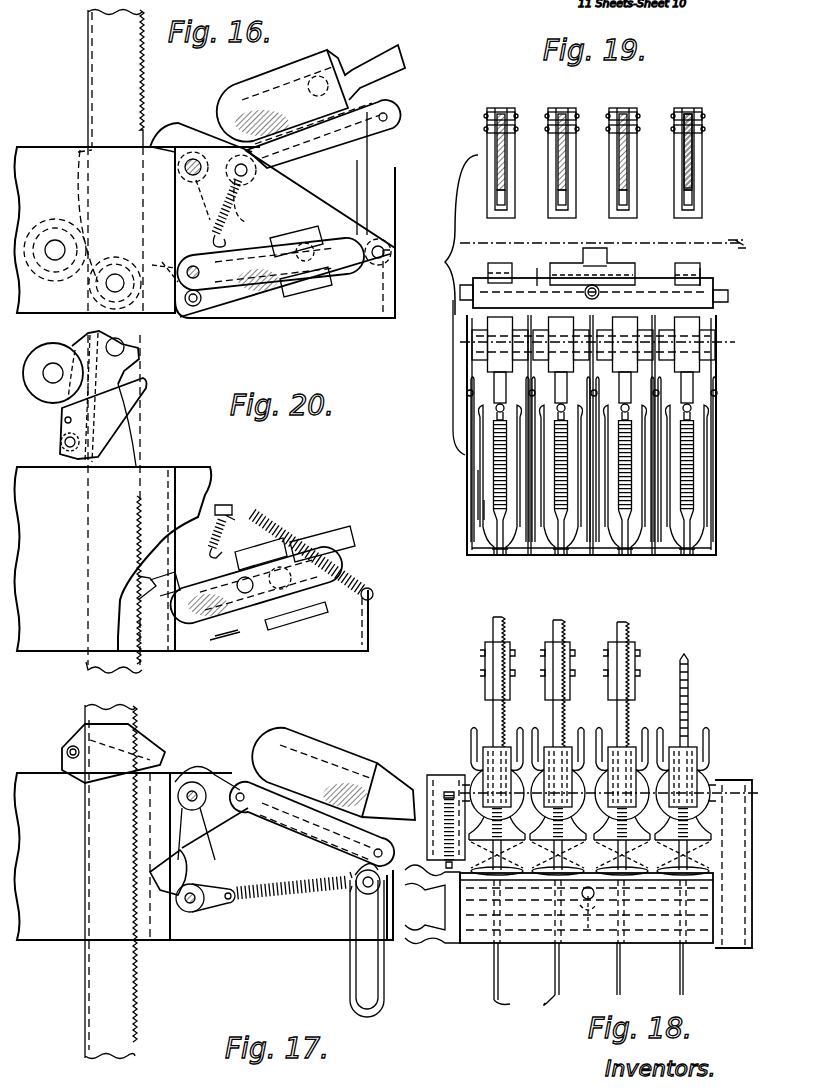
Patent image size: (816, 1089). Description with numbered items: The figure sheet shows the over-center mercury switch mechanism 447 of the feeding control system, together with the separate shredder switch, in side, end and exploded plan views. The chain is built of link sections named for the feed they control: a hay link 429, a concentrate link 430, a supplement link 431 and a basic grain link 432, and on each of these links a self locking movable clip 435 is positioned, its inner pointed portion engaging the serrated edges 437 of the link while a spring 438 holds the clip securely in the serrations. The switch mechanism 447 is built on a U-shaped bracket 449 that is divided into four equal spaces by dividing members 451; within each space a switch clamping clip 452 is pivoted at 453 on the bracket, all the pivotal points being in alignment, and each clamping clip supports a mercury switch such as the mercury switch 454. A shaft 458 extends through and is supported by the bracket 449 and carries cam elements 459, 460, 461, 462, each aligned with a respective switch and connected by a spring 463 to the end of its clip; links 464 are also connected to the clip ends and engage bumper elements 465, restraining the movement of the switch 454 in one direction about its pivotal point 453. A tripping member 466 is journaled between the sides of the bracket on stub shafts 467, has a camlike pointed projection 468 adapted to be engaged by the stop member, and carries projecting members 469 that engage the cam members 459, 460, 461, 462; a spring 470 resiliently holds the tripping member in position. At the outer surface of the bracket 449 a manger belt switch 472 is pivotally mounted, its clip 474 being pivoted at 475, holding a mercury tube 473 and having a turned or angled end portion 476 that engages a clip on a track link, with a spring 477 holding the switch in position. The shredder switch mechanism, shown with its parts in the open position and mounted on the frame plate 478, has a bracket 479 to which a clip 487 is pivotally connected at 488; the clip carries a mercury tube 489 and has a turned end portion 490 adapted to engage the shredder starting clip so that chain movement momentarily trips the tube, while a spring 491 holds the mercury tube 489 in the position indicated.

In FIG. 16, the hay link 429 is at (118, 88).
In FIG. 20, the hay link 429 is at (85, 662).
In FIG. 17, the hay link 429 is at (105, 1017).
In FIG. 19, the hay link 429 is at (508, 145).
In FIG. 18, the hay link 429 is at (504, 628).
In FIG. 19, the concentrate link 430 is at (568, 145).
In FIG. 18, the concentrate link 430 is at (565, 630).
In FIG. 19, the supplement link 431 is at (630, 145).
In FIG. 18, the supplement link 431 is at (630, 632).
In FIG. 19, the basic grain link 432 is at (688, 163).
In FIG. 18, the basic grain link 432 is at (690, 662).
In FIG. 20, the self locking movable clip 435 is at (128, 403).
In FIG. 19, the self locking movable clip 435 is at (700, 112).
In FIG. 16, the blade teeth 437 is at (146, 66).
In FIG. 20, the blade teeth 437 is at (139, 652).
In FIG. 17, the blade teeth 437 is at (140, 1030).
In FIG. 18, the blade teeth 437 is at (503, 708).
In FIG. 17, the spring 438 is at (62, 755).
In FIG. 16, the mercury switch mechanism 447 is at (393, 327).
In FIG. 17, the mercury switch mechanism 447 is at (332, 952).
In FIG. 19, the mercury switch mechanism 447 is at (557, 435).
In FIG. 16, the bracket 449 is at (357, 322).
In FIG. 19, the bracket 449 is at (717, 442).
In FIG. 19, the dividing members 451 is at (540, 540).
In FIG. 16, the switch clamping clip 452 is at (303, 73).
In FIG. 17, the switch clamping clip 452 is at (314, 772).
In FIG. 19, the switch clamping clip 452 is at (480, 470).
In FIG. 18, the switch clamping clip 452 is at (472, 740).
In FIG. 16, the pivotal point 453 is at (243, 177).
In FIG. 19, the pivotal point 453 is at (468, 393).
In FIG. 16, the mercury switch 454 is at (386, 60).
In FIG. 17, the mercury switch 454 is at (392, 795).
In FIG. 16, the shaft 458 is at (196, 163).
In FIG. 17, the shaft 458 is at (196, 794).
In FIG. 19, the shaft 458 is at (725, 342).
In FIG. 18, the shaft 458 is at (720, 792).
In FIG. 16, the cam element 459 is at (178, 134).
In FIG. 19, the cam element 459 is at (500, 318).
In FIG. 19, the cam element 460 is at (560, 318).
In FIG. 19, the cam element 461 is at (625, 320).
In FIG. 19, the cam element 462 is at (688, 320).
In FIG. 16, the spring 463 is at (324, 134).
In FIG. 17, the spring 463 is at (312, 824).
In FIG. 19, the spring 463 is at (690, 473).
In FIG. 18, the spring 463 is at (700, 828).
In FIG. 16, the link 464 is at (392, 180).
In FIG. 18, the link 464 is at (497, 1000).
In FIG. 16, the bumper element 465 is at (390, 250).
In FIG. 17, the tripping member 466 is at (198, 908).
In FIG. 19, the tripping member 466 is at (594, 278).
In FIG. 17, the stub shaft 467 is at (210, 890).
In FIG. 19, the stub shaft 467 is at (488, 270).
In FIG. 17, the camlike pointed projection 468 is at (150, 872).
In FIG. 19, the camlike pointed projection 468 is at (602, 254).
In FIG. 19, the projecting member 469 is at (500, 268).
In FIG. 17, the spring 470 is at (297, 897).
In FIG. 16, the manger belt switch 472 is at (275, 300).
In FIG. 16, the mercury tube 473 is at (348, 283).
In FIG. 16, the clip 474 is at (300, 238).
In FIG. 16, the pivot 475 is at (196, 303).
In FIG. 16, the turned or angled end portion 476 is at (165, 318).
In FIG. 16, the spring 477 is at (230, 226).
In FIG. 20, the frame 478 is at (381, 622).
In FIG. 20, the bracket 479 is at (370, 638).
In FIG. 20, the clip 487 is at (313, 598).
In FIG. 20, the pivotal connection 488 is at (196, 636).
In FIG. 20, the mercury tube 489 is at (278, 628).
In FIG. 20, the turned end portion 490 is at (138, 576).
In FIG. 20, the spring 491 is at (291, 552).